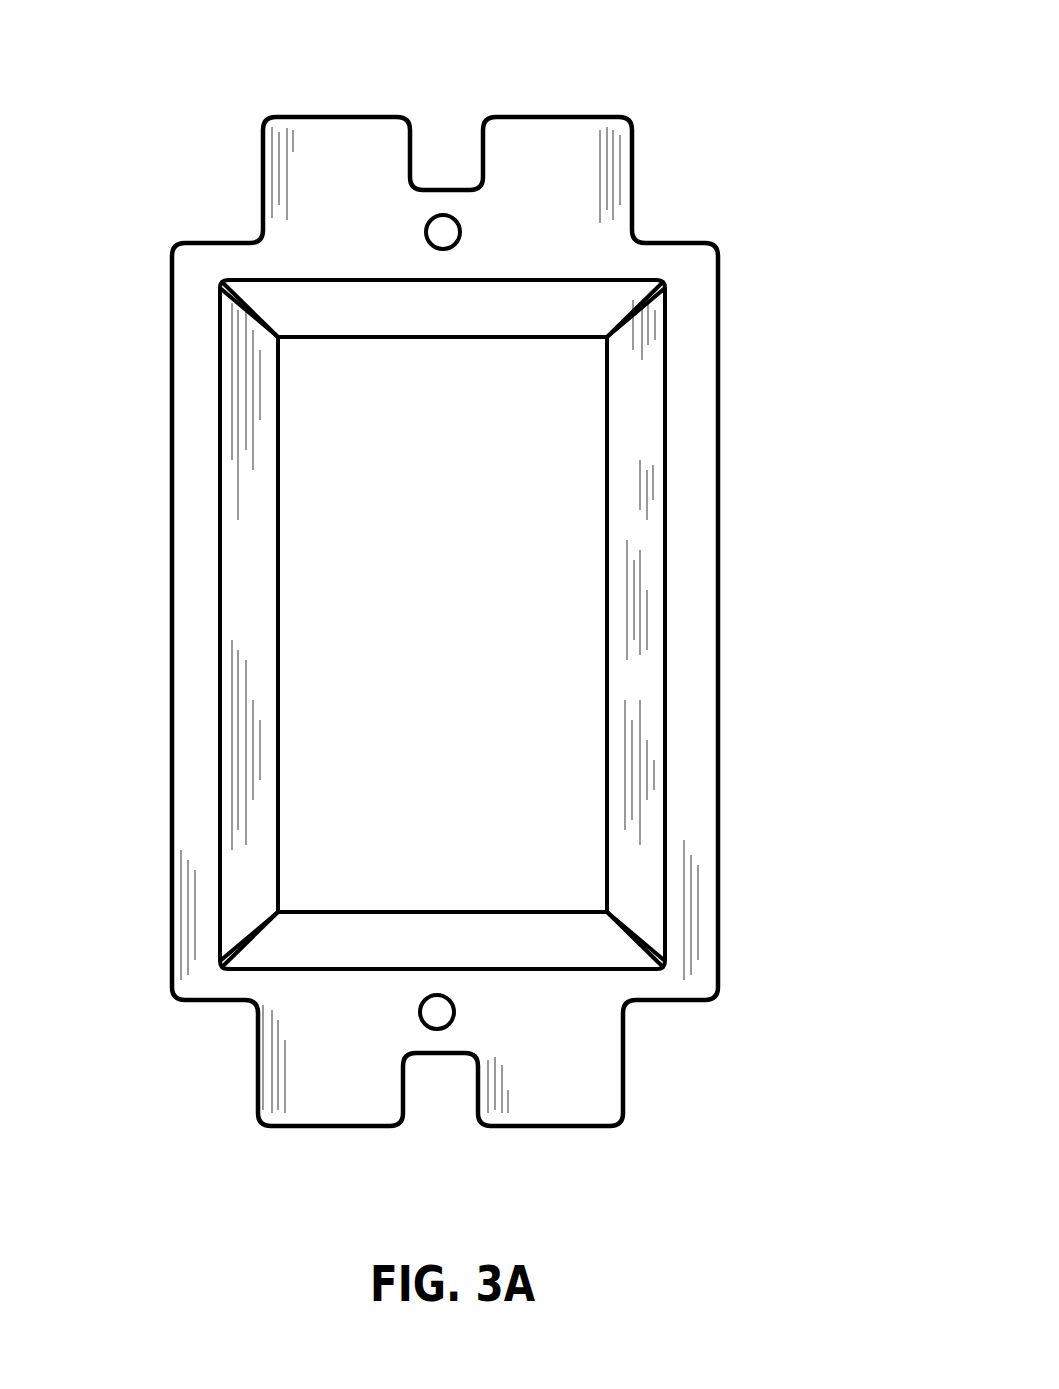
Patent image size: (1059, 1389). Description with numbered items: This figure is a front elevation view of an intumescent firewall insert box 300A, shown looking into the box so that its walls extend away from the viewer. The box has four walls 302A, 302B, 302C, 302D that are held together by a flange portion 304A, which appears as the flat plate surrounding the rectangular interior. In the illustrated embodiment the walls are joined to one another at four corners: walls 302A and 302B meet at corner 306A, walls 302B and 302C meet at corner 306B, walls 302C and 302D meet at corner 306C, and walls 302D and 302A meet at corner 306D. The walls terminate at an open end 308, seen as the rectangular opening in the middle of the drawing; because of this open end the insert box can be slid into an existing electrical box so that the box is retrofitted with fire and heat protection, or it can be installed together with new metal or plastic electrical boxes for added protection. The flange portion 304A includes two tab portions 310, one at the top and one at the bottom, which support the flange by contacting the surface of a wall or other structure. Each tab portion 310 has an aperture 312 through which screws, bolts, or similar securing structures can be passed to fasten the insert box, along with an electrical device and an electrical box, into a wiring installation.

The intumescent firewall insert box 300A is at (752, 38).
The flange portion 304A is at (729, 360).
The wall 302A is at (637, 643).
The wall 302B is at (472, 322).
The wall 302C is at (252, 643).
The wall 302D is at (472, 951).
The corner 306A is at (623, 317).
The corner 306B is at (263, 317).
The corner 306C is at (258, 933).
The corner 306D is at (625, 933).
The open end 308 is at (512, 510).
The tab portion 310 is at (600, 180).
The aperture 312 is at (441, 232).